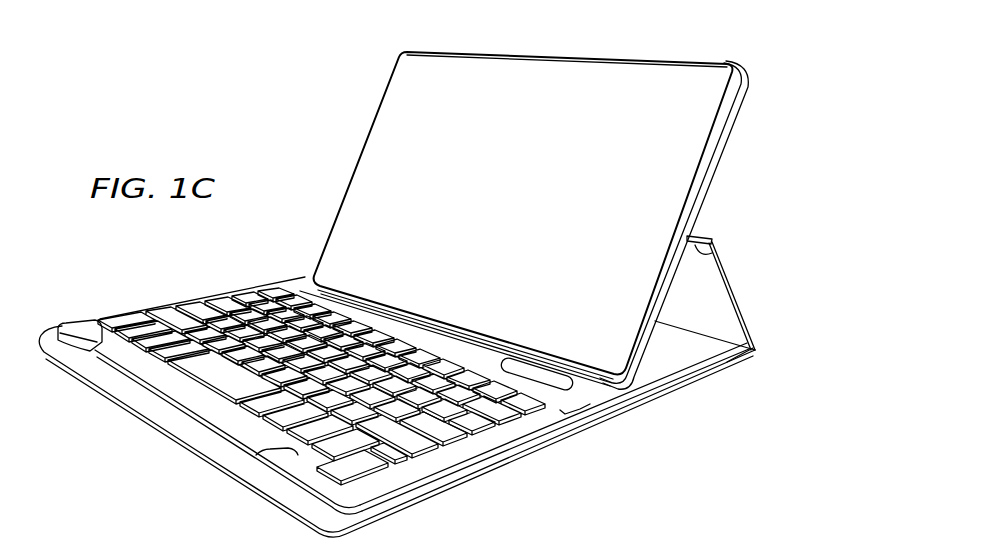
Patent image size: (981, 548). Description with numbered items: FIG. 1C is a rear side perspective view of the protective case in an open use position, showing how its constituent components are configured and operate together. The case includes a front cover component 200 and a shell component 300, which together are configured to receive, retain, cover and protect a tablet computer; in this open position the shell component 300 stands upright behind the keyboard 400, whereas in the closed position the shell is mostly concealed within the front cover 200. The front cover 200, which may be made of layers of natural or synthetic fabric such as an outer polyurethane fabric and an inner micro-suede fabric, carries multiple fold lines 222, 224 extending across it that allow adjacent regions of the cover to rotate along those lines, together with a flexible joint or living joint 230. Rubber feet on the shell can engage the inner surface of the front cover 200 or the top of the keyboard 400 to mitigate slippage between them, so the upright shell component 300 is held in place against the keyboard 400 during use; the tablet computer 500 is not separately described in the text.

The tablet computing device 500 is at (407, 108).
The shell component 300 is at (743, 80).
The front cover component 200 is at (725, 261).
The fold line 222 is at (712, 253).
The fold line 224 is at (735, 338).
The flexible joint or living joint 230 is at (643, 388).
The keyboard 400 is at (247, 430).